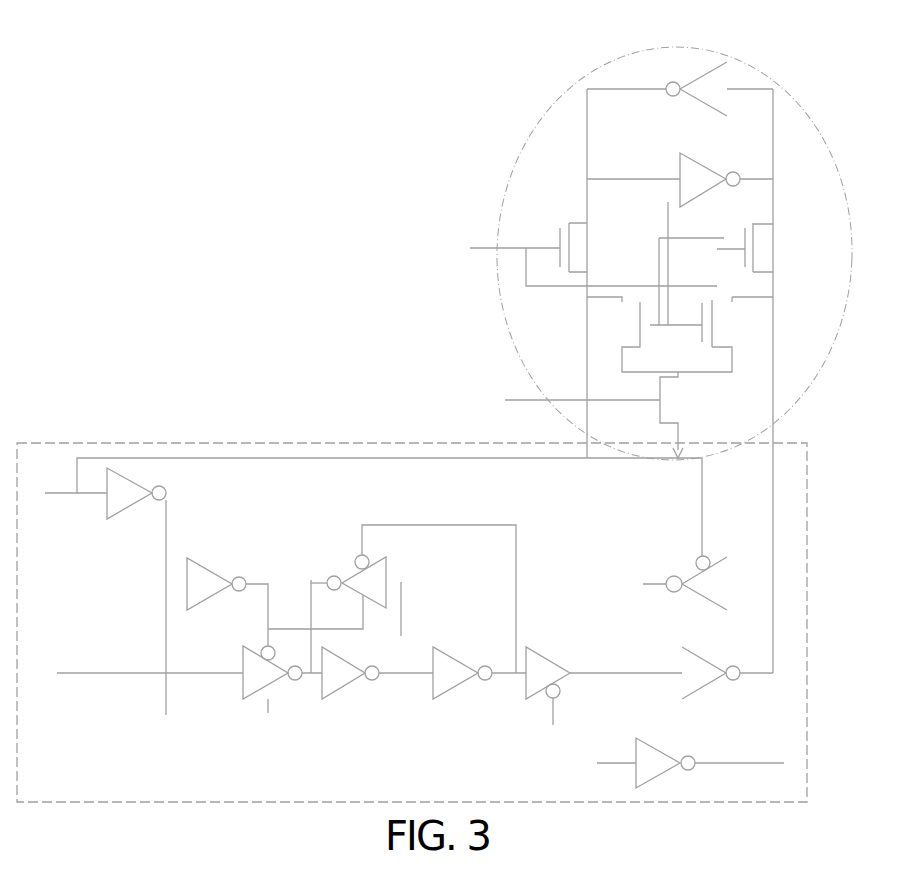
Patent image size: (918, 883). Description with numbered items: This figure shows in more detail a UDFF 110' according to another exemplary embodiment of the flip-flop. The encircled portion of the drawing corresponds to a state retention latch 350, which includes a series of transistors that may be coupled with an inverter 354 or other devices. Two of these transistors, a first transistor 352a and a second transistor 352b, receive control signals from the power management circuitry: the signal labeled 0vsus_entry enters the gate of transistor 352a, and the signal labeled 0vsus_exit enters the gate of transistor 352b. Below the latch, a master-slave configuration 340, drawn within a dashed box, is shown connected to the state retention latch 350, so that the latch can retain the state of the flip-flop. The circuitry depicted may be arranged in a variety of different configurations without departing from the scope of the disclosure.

The UDFF 110' is at (438, 403).
The master-slave configuration 340 is at (208, 442).
The state retention latch 350 is at (513, 165).
The transistor 352a is at (560, 247).
The transistor 352b is at (652, 398).
The inverter 354 is at (712, 90).